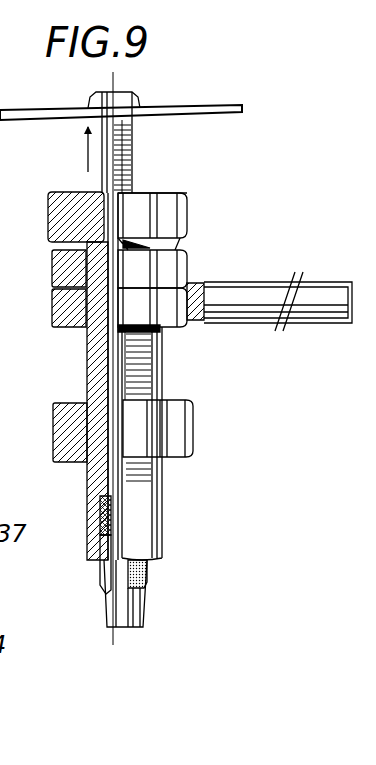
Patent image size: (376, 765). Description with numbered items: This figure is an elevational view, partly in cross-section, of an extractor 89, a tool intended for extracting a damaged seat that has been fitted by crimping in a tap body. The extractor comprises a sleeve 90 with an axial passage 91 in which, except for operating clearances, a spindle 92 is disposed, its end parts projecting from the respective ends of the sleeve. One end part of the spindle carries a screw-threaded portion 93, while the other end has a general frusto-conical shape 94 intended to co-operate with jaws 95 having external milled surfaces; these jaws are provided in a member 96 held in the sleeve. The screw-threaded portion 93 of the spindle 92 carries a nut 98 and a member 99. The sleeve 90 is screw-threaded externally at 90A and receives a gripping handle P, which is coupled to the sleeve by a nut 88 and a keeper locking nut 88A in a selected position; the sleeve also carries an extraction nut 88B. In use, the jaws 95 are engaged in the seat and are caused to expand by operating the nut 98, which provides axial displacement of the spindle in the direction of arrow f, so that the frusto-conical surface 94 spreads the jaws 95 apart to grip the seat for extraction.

The nut 88 is at (190, 287).
The keeper locking nut 88A is at (190, 256).
The extraction nut 88B is at (191, 408).
The extractor 89 is at (208, 197).
The sleeve 90 is at (84, 355).
The externally screw-threaded portion of the sleeve 90A is at (161, 357).
The axial passage 91 is at (84, 340).
The spindle 92 is at (116, 377).
The screw-threaded portion 93 is at (133, 147).
The frusto-conical shape 94 is at (150, 626).
The jaws 95 is at (107, 566).
The member 96 is at (100, 519).
The nut 98 is at (177, 194).
The member 99 is at (240, 105).
The gripping handle P is at (316, 298).
The arrow f is at (82, 152).